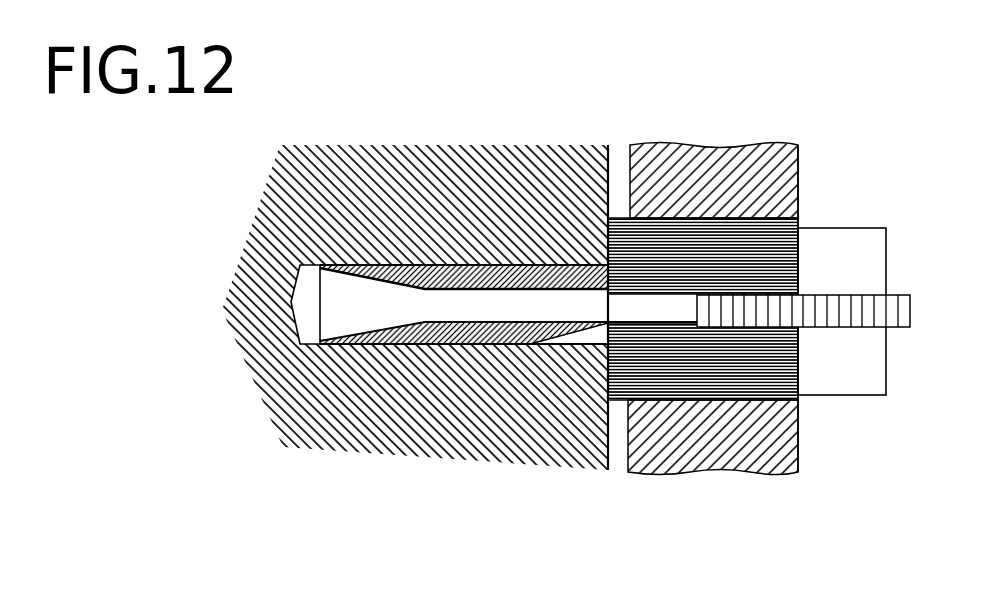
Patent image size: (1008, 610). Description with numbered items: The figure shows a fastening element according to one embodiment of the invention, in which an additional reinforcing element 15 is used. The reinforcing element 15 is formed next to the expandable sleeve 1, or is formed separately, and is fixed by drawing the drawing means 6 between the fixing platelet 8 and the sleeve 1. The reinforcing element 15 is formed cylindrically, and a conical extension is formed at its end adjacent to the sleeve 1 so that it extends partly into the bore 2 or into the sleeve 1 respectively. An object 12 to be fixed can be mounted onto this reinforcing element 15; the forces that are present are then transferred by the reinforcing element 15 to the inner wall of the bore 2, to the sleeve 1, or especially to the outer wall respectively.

The sleeve 1 is at (433, 277).
The bore cavity 2 is at (340, 306).
The drawing means 6 is at (794, 302).
The fixing platelet 8 is at (862, 368).
The object to be fixed 12 is at (660, 474).
The reinforcing element 15 is at (658, 262).